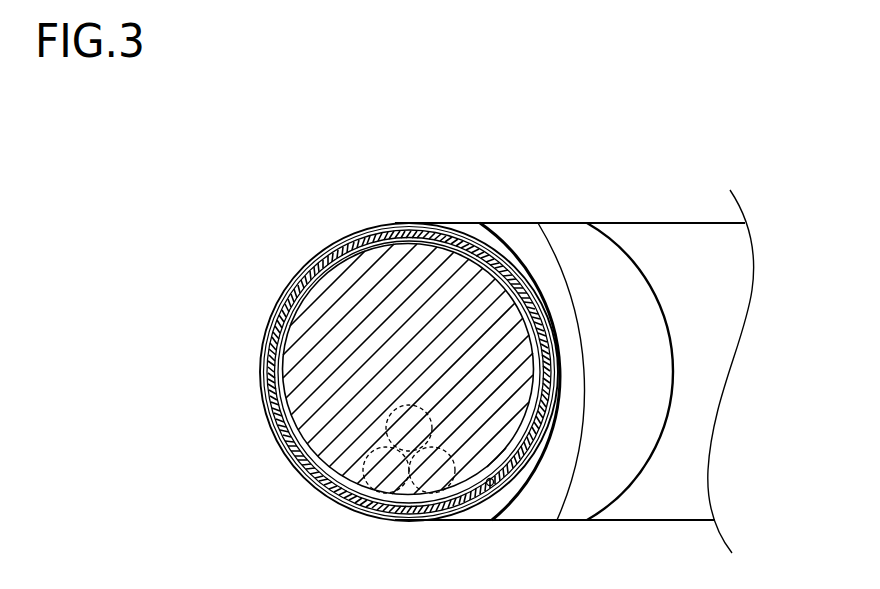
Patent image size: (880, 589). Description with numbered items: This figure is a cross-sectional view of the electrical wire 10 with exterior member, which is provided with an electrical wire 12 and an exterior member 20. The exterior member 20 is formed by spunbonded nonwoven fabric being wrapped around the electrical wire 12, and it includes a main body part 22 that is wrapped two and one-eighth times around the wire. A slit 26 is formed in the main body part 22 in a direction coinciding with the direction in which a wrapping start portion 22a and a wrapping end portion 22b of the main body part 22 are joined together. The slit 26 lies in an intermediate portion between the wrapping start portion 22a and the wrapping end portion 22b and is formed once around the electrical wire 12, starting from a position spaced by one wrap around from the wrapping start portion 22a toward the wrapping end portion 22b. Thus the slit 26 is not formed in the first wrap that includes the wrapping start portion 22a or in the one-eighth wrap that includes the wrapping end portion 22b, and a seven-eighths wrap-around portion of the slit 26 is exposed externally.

The electrical wire with exterior member 10 is at (320, 173).
The electrical wire 12 is at (426, 496).
The exterior member 20 is at (536, 217).
The main body part 22 is at (262, 372).
The wrapping start portion 22a is at (551, 357).
The wrapping end portion 22b is at (513, 478).
The slit 26 is at (578, 313).